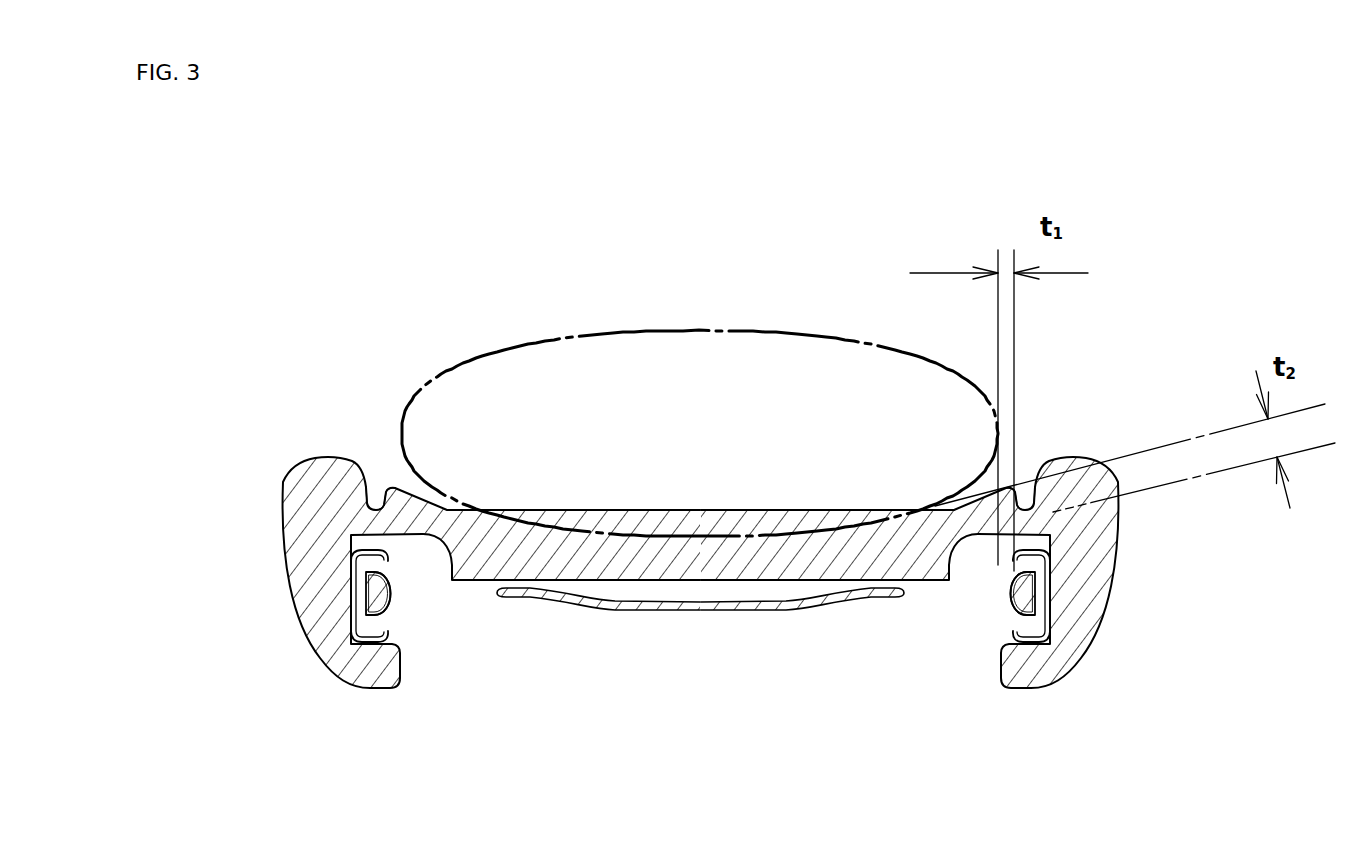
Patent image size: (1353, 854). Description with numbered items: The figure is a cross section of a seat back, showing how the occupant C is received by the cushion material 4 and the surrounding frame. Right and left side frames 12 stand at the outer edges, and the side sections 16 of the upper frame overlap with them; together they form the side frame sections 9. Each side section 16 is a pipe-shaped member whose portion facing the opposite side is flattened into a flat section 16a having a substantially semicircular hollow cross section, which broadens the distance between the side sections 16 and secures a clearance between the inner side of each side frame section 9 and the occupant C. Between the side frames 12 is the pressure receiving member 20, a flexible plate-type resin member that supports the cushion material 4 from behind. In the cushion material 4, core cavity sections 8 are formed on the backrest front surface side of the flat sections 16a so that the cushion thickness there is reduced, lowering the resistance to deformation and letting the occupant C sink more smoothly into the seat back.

The cushion material 4 is at (1083, 467).
The core cavity section 8 is at (370, 537).
The side frame section 9 is at (696, 644).
The side frame 12 is at (352, 568).
The side section 16 is at (366, 620).
The flat section 16a is at (395, 593).
The pressure receiving member 20 is at (670, 608).
The occupant C is at (737, 331).